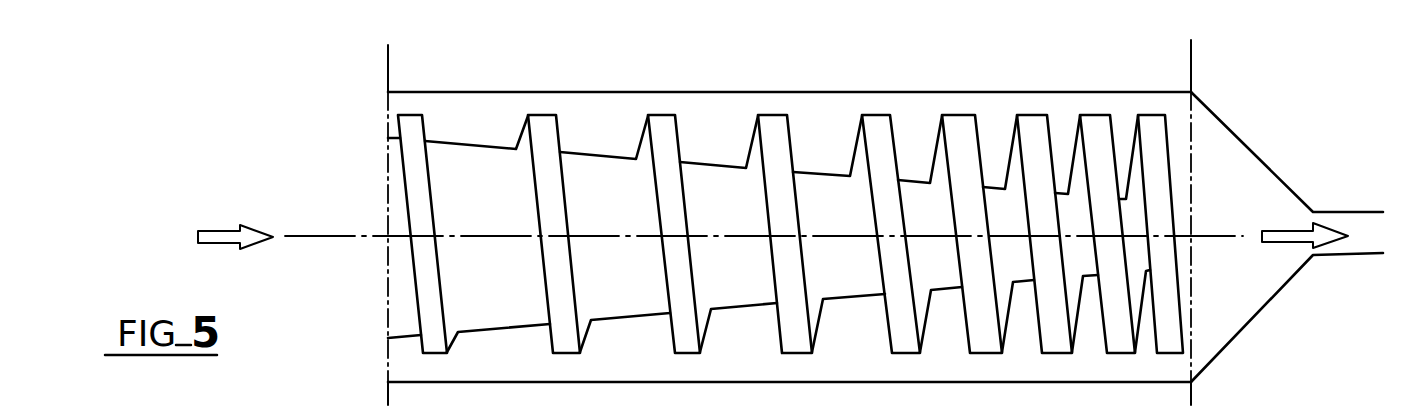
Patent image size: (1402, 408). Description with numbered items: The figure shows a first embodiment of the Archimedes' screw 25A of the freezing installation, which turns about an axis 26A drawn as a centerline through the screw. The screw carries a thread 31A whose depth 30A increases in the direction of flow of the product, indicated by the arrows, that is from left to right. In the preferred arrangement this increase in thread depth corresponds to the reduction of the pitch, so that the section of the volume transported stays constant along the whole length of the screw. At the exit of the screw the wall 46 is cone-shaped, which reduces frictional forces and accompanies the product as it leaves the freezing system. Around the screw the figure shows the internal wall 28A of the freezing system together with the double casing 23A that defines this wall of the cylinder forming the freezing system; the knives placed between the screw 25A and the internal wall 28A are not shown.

The double casing 23A is at (628, 92).
The Archimedes' screw 25A is at (406, 314).
The axis 26A is at (353, 239).
The internal wall 28A is at (1084, 92).
The depth 30A is at (461, 144).
The thread 31A is at (543, 114).
The wall 46 is at (1234, 141).